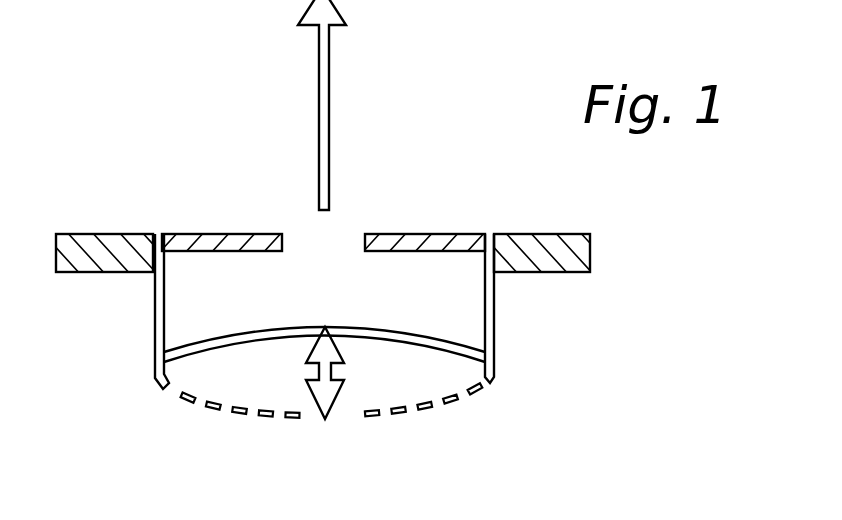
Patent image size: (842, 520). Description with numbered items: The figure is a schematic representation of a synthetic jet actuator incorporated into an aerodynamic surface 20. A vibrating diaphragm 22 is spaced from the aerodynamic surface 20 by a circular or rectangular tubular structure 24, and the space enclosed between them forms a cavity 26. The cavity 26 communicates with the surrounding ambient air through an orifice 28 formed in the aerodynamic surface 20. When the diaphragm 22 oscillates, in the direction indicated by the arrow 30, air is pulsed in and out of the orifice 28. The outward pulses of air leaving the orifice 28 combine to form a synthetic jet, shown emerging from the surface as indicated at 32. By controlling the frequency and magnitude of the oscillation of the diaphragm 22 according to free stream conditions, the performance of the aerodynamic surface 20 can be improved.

The aerodynamic surface 20 is at (557, 272).
The vibrating diaphragm 22 is at (215, 420).
The tubular structure 24 is at (152, 330).
The cavity 26 is at (437, 309).
The orifice 28 is at (342, 233).
The arrow 30 is at (338, 403).
The synthetic jet 32 is at (329, 67).